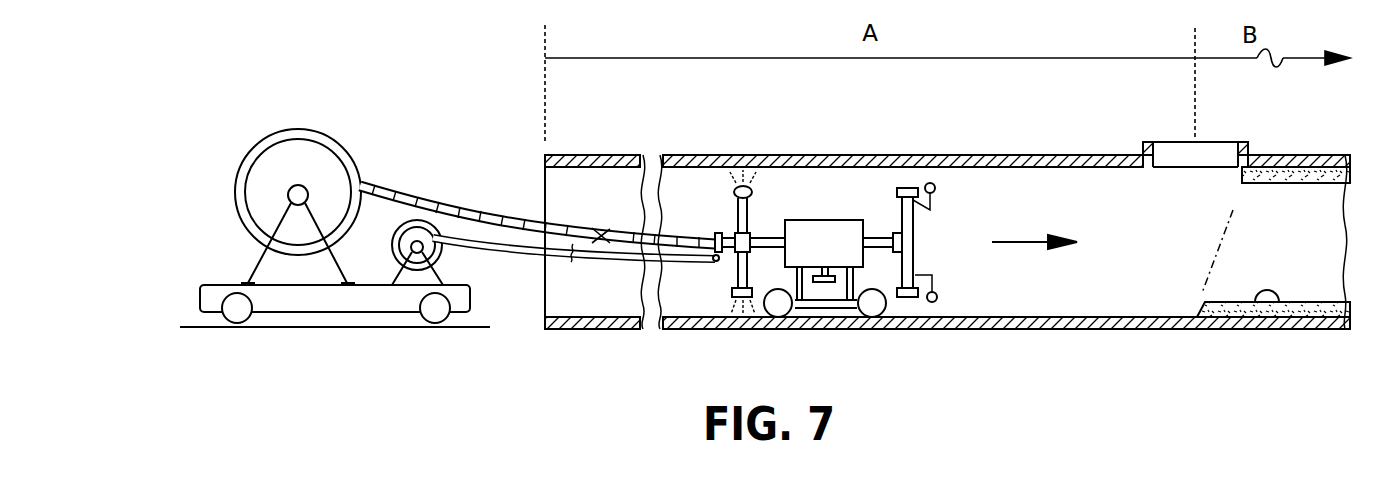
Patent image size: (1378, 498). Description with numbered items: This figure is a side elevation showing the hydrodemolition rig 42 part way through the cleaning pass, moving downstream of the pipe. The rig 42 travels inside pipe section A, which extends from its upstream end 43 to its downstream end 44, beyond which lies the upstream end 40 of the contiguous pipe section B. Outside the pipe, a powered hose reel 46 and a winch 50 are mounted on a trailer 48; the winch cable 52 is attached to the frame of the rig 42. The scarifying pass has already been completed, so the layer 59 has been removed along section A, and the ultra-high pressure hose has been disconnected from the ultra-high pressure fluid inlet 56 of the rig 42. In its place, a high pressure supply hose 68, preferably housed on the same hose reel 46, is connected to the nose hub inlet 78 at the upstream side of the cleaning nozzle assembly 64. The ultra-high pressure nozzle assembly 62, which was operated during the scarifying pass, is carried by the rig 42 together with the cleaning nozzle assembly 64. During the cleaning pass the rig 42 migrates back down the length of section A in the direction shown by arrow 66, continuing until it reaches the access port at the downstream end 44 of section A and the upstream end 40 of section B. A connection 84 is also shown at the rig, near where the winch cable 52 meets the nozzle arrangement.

The upstream end 40 is at (1257, 208).
The hydrodemolition rig 42 is at (840, 305).
The upstream end 43 is at (543, 187).
The downstream end 44 is at (1123, 203).
The powered hose reel 46 is at (295, 133).
The trailer 48 is at (295, 298).
The winch 50 is at (392, 257).
The winch cable 52 is at (510, 257).
The ultra-high pressure fluid inlet 56 is at (825, 287).
The layer 59 is at (1257, 300).
The ultra-high pressure nozzle assembly 62 is at (922, 245).
The cleaning nozzle assembly 64 is at (747, 207).
The arrow 66 is at (1027, 242).
The high pressure supply hose 68 is at (400, 193).
The nose hub inlet 78 is at (716, 236).
The cable connection 84 is at (718, 258).